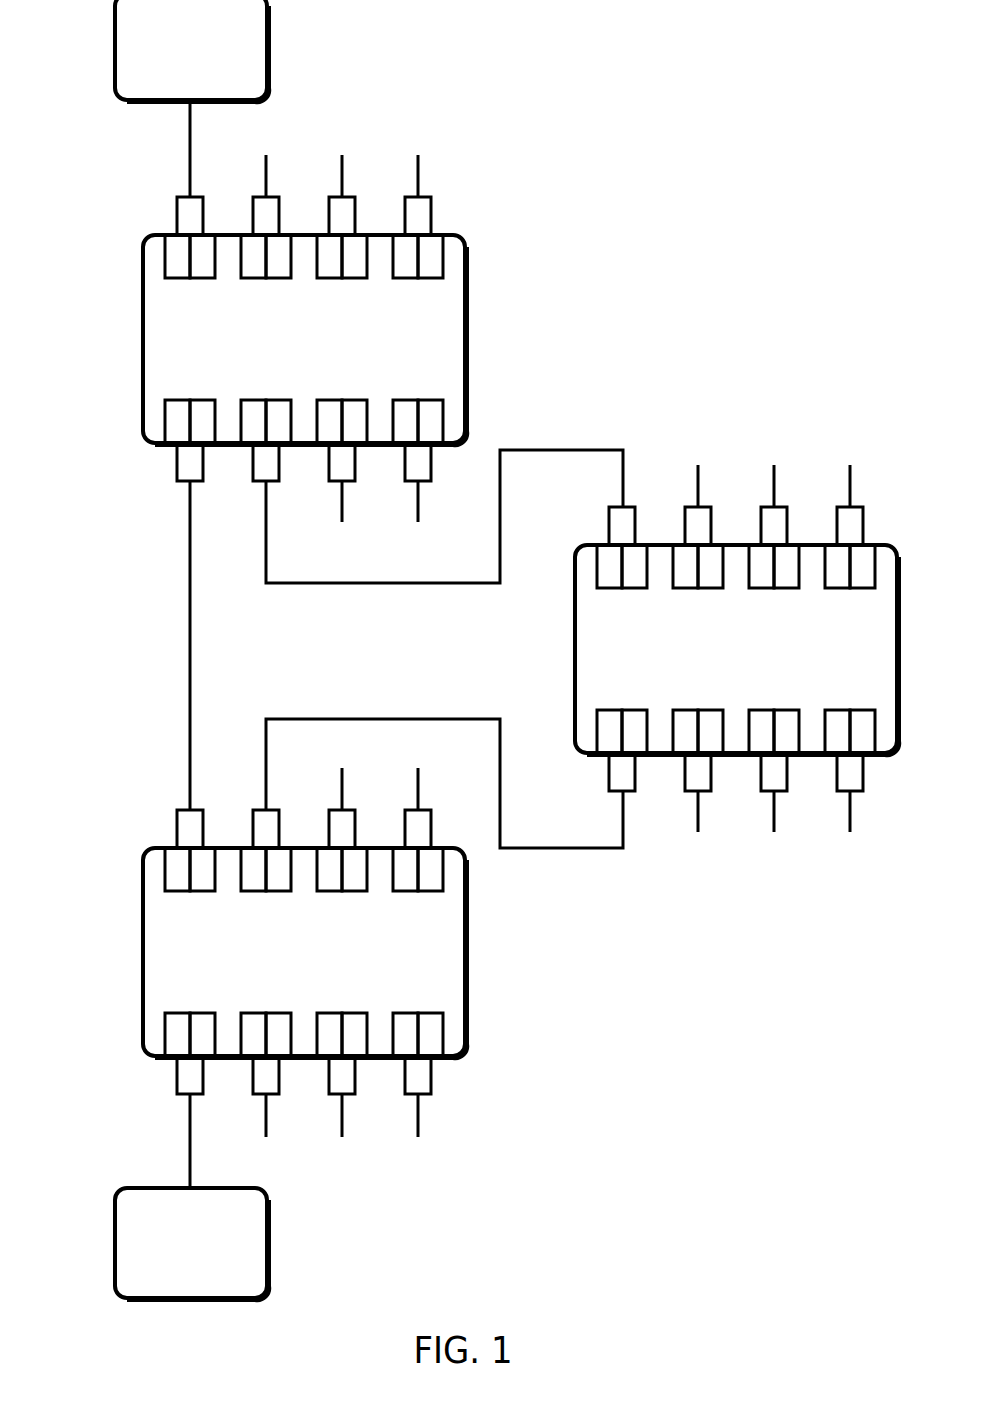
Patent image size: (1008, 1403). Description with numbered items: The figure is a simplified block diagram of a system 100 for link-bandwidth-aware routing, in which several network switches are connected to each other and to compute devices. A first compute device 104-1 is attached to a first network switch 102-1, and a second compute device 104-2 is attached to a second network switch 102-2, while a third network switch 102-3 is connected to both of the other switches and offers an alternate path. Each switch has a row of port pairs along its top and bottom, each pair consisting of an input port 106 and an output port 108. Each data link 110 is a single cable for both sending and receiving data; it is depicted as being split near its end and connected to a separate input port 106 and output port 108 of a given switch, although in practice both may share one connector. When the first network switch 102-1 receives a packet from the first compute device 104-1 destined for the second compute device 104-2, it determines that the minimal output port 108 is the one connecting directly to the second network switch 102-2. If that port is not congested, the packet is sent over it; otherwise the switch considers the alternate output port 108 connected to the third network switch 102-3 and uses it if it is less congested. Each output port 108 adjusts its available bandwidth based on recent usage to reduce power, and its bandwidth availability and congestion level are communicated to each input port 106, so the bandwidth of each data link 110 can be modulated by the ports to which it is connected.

The system 100 is at (54, 190).
The first network switch 102-1 is at (143, 947).
The second network switch 102-2 is at (143, 335).
The third network switch 102-3 is at (575, 654).
The first compute device 104-1 is at (176, 1187).
The second compute device 104-2 is at (176, 103).
The input port 106 is at (408, 1011).
The output port 108 is at (444, 1011).
The data link 110 is at (418, 1122).